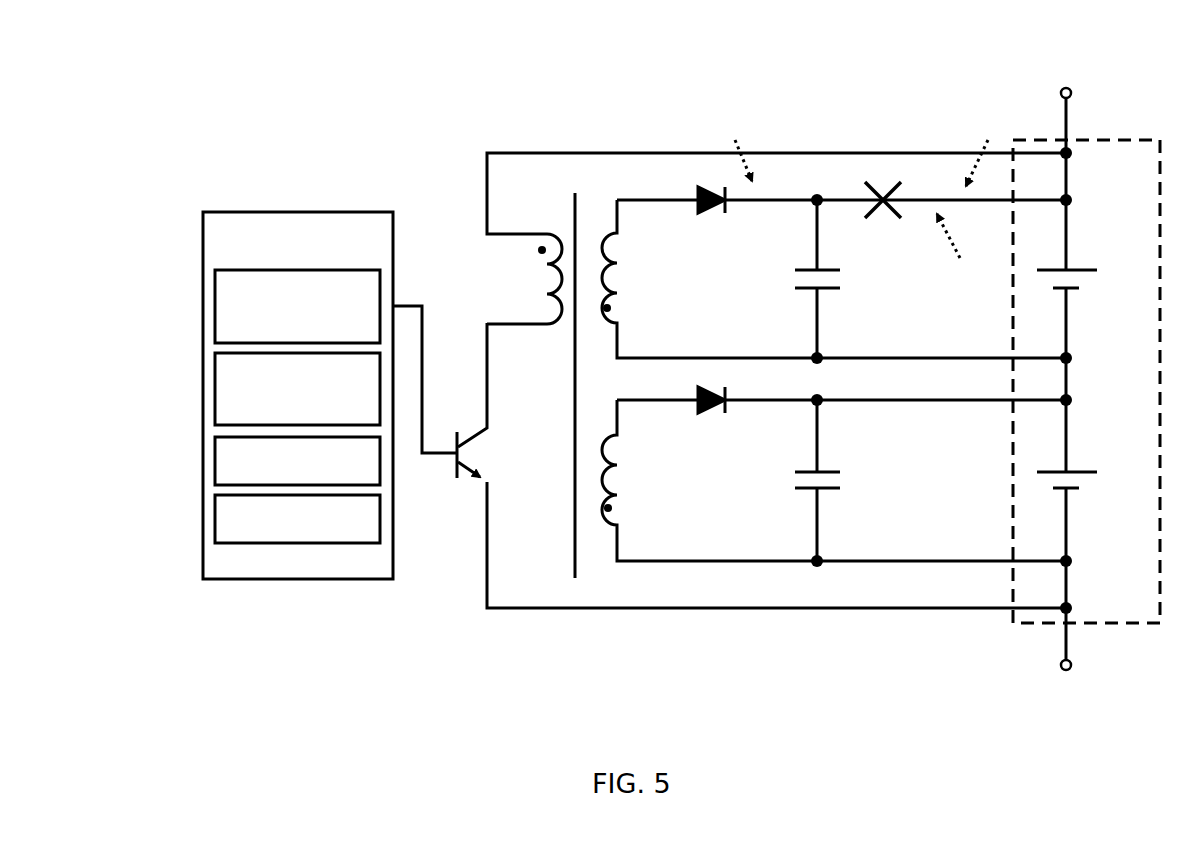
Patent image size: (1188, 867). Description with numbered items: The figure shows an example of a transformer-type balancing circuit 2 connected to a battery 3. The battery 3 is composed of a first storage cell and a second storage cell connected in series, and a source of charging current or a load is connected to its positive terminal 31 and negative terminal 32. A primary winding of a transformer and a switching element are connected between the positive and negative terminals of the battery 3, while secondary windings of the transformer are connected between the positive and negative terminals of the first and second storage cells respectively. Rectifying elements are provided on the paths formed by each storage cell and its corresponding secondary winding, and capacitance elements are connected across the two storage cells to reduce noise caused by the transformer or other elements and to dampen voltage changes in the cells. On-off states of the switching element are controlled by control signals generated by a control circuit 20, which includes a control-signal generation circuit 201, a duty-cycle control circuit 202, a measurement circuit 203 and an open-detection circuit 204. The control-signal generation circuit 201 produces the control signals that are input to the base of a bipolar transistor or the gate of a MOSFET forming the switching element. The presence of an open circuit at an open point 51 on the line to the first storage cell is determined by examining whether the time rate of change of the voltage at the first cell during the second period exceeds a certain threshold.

The transformer-type balancing circuit 2 is at (594, 98).
The battery 3 is at (1103, 138).
The control circuit 20 is at (347, 212).
The control-signal generation circuit 201 is at (212, 311).
The duty-cycle control circuit 202 is at (212, 388).
The measurement circuit 203 is at (212, 458).
The open-detection circuit 204 is at (212, 519).
The positive terminal 31 is at (1073, 92).
The negative terminal 32 is at (1072, 668).
The open point 51 is at (883, 197).